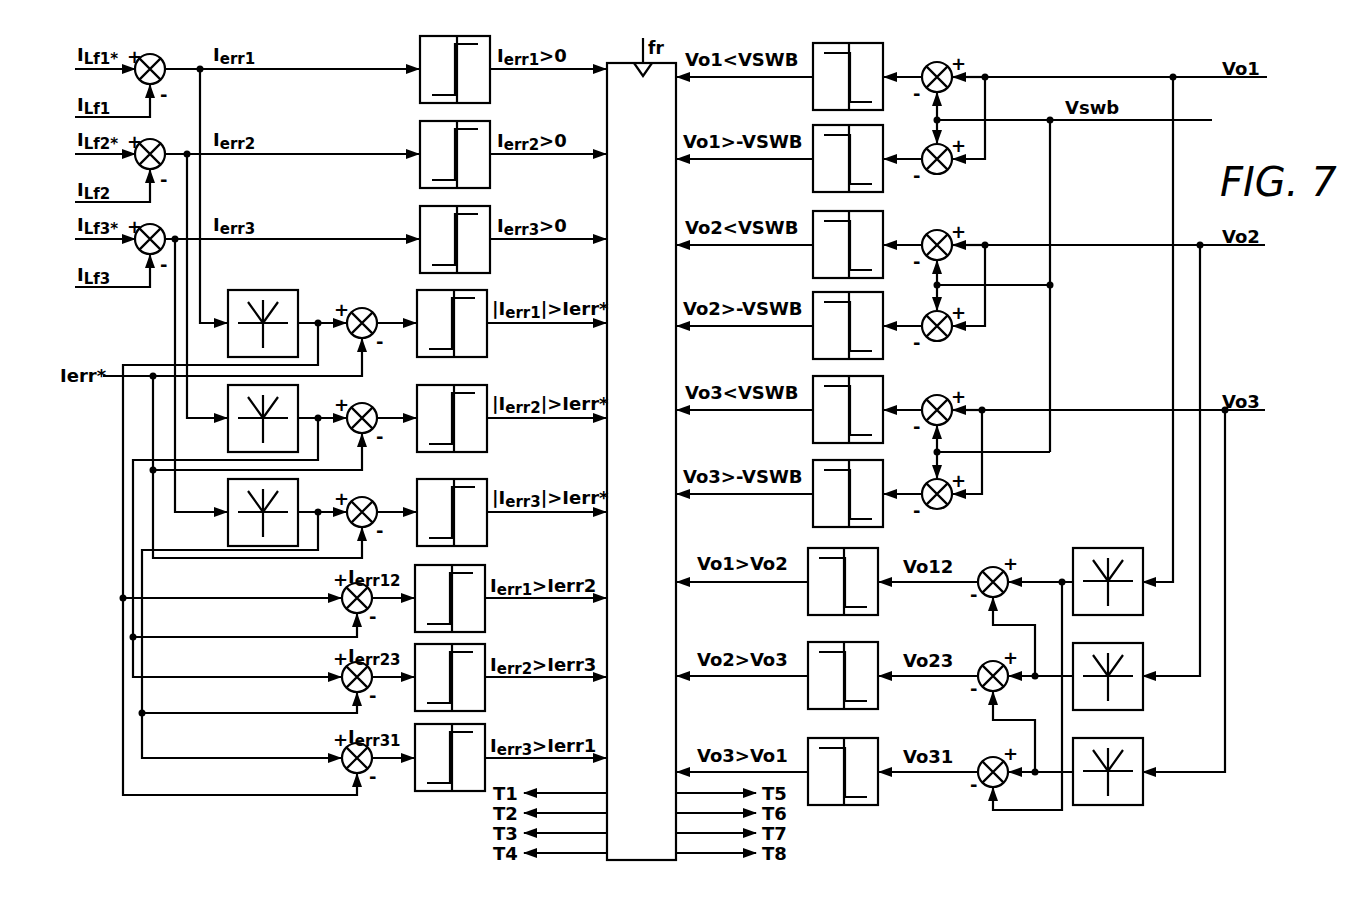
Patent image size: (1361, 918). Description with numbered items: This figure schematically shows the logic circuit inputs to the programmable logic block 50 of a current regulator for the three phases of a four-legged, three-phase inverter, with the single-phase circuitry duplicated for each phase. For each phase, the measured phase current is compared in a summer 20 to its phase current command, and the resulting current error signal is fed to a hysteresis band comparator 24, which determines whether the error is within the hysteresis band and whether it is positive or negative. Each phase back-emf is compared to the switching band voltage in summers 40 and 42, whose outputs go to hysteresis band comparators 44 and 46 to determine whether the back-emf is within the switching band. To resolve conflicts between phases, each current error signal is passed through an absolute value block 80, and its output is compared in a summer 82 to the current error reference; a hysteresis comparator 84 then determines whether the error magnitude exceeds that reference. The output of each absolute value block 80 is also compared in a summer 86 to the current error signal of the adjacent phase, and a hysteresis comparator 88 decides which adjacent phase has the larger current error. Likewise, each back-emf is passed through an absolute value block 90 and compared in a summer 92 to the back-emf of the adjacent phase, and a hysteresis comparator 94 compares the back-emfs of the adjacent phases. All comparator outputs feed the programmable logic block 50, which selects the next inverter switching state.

The summer 20 is at (162, 145).
The hysteresis band comparator 24 is at (433, 154).
The summer 40 is at (937, 227).
The summer 42 is at (951, 337).
The hysteresis band comparator 44 is at (864, 243).
The hysteresis band comparator 46 is at (864, 326).
The programmable logic block 50 is at (649, 624).
The absolute value block 80 is at (279, 411).
The summer 82 is at (371, 404).
The hysteresis comparator 84 is at (475, 420).
The summer 86 is at (339, 668).
The hysteresis comparator 88 is at (455, 685).
The absolute value block 90 is at (1123, 662).
The summer 92 is at (985, 663).
The hysteresis comparator 94 is at (825, 665).